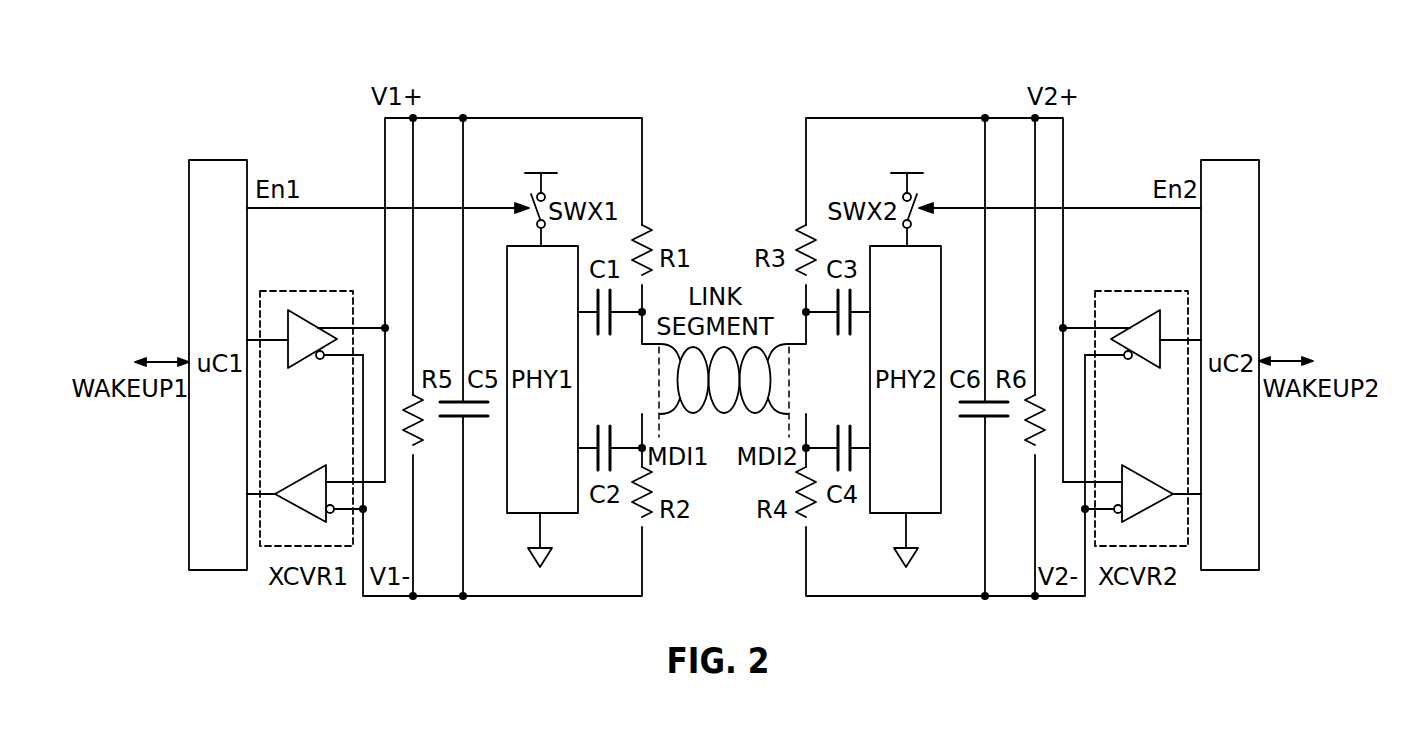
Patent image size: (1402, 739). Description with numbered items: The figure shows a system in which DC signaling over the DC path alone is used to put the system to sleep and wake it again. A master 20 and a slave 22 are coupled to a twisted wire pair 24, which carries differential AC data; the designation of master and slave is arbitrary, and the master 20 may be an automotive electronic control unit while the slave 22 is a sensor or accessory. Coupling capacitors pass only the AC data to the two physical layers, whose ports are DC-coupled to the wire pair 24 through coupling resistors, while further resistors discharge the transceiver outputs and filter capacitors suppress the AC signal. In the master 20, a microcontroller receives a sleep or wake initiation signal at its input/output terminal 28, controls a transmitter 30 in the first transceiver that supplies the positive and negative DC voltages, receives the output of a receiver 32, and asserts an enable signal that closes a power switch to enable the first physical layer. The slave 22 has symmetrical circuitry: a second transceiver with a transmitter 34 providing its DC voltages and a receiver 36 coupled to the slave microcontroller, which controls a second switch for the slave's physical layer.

The master 20 is at (158, 227).
The slave 22 is at (1290, 227).
The twisted wire pair 24 is at (727, 414).
The input/output terminal 28 is at (188, 356).
The transmitter 30 is at (306, 369).
The receiver 32 is at (293, 485).
The transmitter 34 is at (1142, 369).
The receiver 36 is at (1155, 485).